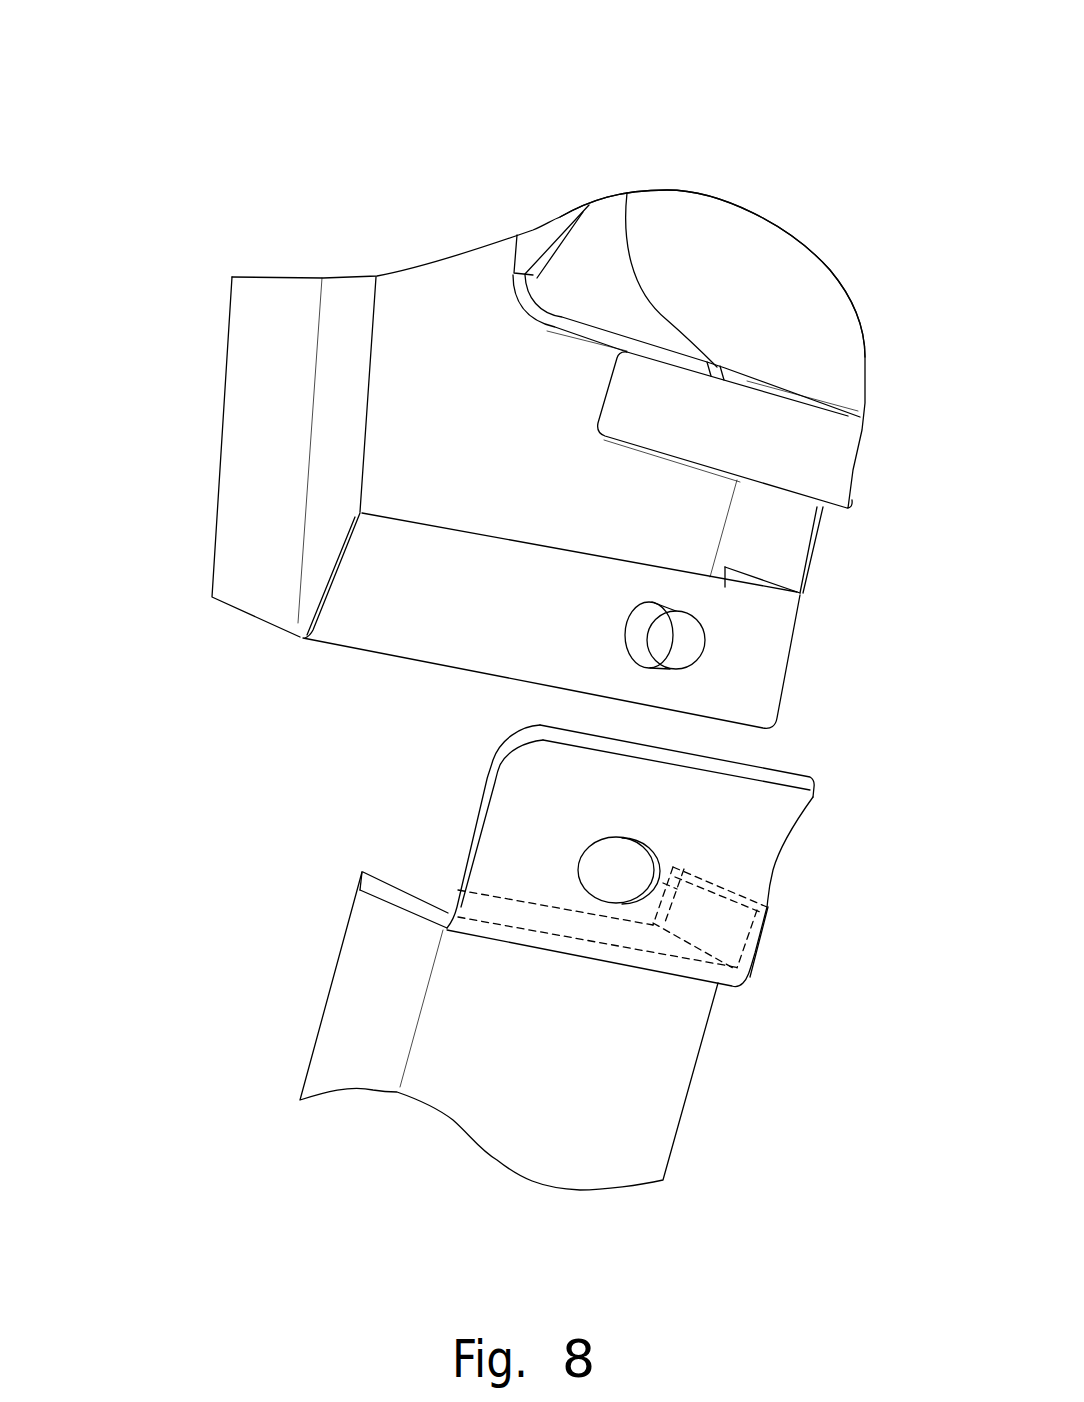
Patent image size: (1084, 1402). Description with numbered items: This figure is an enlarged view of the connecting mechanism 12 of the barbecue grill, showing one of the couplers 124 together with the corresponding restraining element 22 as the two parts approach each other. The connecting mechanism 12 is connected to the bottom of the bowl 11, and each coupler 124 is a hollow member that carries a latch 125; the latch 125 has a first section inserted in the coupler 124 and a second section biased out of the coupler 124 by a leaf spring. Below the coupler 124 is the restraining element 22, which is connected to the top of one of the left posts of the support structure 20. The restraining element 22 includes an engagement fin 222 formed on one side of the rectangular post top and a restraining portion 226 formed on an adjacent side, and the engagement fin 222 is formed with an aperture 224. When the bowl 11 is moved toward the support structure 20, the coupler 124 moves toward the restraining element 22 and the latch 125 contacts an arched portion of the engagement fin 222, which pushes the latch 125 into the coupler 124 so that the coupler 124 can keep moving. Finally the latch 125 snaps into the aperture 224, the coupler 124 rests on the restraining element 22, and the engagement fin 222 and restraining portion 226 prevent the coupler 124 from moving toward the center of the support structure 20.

The bowl 11 is at (732, 275).
The connecting mechanism 12 is at (183, 387).
The coupler 124 is at (325, 555).
The latch 125 is at (680, 622).
The support structure 20 is at (293, 965).
The restraining element 22 is at (405, 893).
The engagement fin 222 is at (758, 808).
The aperture 224 is at (618, 877).
The restraining portion 226 is at (720, 928).